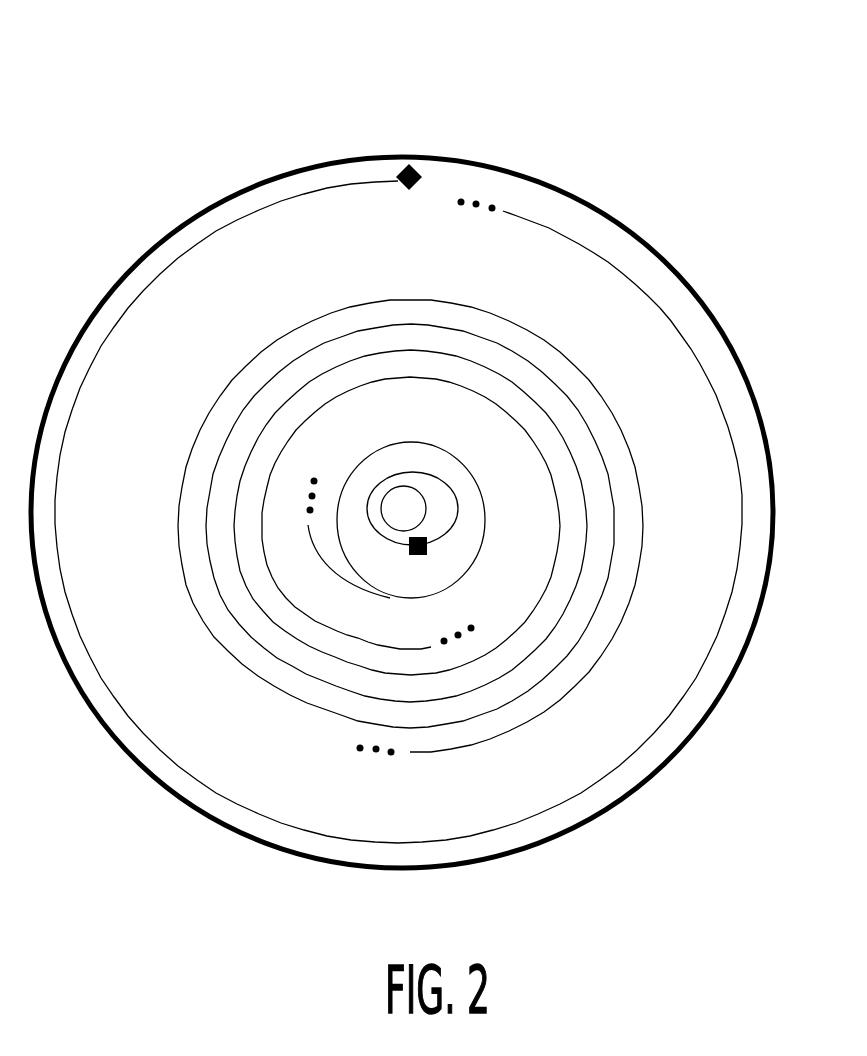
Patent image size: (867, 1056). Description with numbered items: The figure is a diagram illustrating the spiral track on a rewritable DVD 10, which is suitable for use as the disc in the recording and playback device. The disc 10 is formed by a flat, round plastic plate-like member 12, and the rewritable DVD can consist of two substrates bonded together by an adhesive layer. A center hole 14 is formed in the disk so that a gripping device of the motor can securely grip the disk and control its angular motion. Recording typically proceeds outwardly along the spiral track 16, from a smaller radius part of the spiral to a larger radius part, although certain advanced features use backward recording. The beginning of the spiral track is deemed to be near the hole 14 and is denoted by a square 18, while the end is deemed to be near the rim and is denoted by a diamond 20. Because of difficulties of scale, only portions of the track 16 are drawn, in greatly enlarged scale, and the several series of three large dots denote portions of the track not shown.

The rewritable DVD 10 is at (432, 48).
The plate-like member 12 is at (541, 178).
The center hole 14 is at (425, 517).
The spiral track 16 is at (473, 473).
The square 18 is at (427, 547).
The diamond 20 is at (400, 167).